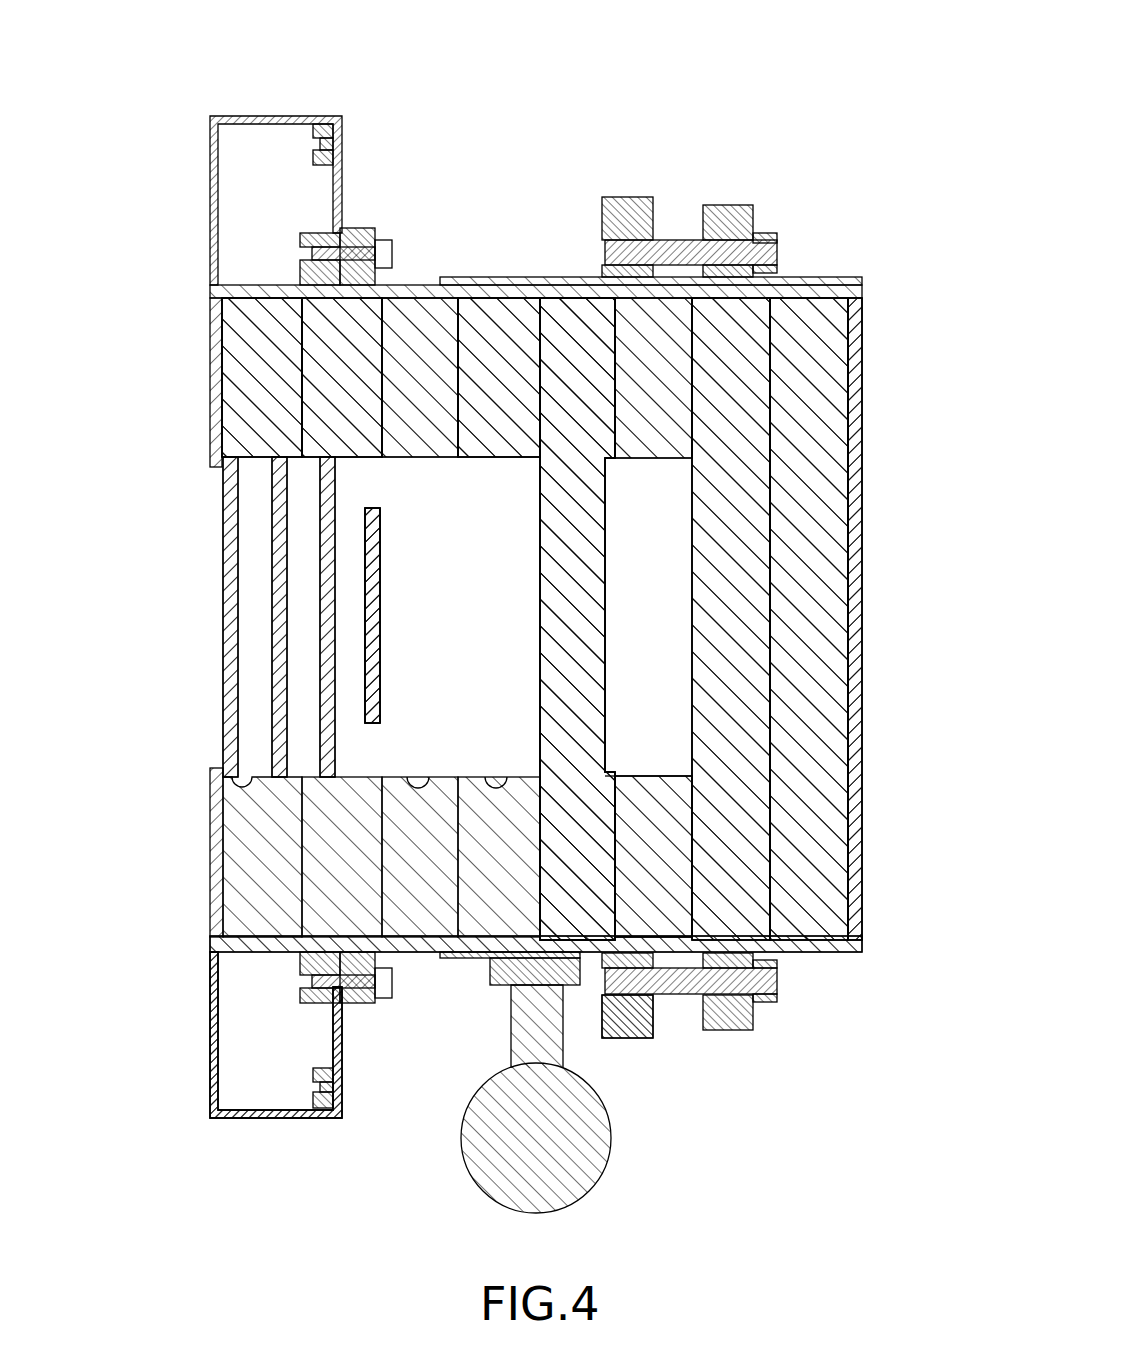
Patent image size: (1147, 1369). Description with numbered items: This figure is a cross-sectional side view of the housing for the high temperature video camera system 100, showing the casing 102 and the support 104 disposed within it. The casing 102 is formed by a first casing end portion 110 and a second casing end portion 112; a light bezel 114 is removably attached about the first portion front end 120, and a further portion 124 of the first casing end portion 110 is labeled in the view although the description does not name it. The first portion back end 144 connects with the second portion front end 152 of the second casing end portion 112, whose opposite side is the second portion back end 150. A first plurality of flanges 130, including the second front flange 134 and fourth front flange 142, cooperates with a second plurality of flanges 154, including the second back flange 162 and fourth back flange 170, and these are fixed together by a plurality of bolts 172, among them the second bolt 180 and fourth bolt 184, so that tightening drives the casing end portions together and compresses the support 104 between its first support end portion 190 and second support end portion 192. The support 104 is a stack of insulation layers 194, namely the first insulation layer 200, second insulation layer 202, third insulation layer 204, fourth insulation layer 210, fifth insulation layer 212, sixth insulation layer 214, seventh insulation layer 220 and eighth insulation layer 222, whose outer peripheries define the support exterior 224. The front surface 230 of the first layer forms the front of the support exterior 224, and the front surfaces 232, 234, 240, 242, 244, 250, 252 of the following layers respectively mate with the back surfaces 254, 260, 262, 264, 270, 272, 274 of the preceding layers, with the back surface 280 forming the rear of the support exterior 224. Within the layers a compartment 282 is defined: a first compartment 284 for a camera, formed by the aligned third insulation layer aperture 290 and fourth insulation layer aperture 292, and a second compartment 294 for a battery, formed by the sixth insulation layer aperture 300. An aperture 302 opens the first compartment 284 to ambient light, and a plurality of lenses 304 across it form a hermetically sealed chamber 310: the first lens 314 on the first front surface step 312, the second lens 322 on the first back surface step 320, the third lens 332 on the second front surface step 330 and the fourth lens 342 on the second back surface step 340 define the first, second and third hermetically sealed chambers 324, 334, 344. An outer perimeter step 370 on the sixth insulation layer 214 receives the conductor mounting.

The high temperature video camera system 100 is at (895, 102).
The casing 102 is at (855, 387).
The support 104 is at (492, 292).
The first casing end portion 110 is at (367, 945).
The second casing end portion 112 is at (630, 1025).
The light bezel 114 is at (272, 1120).
The first portion front end 120 is at (245, 956).
The bracket 124 is at (213, 1090).
The first plurality of flanges 130 is at (661, 581).
The second front flange 134 is at (652, 330).
The fourth front flange 142 is at (678, 945).
The first portion back end 144 is at (503, 947).
The second portion back end 150 is at (835, 948).
The second portion front end 152 is at (575, 945).
The second plurality of flanges 154 is at (788, 559).
The second back flange 162 is at (727, 217).
The fourth back flange 170 is at (728, 1017).
The plurality of bolts 172 is at (757, 566).
The second bolt 180 is at (735, 248).
The fourth bolt 184 is at (737, 985).
The first support end portion 190 is at (245, 905).
The second support end portion 192 is at (833, 893).
The plurality of insulation layers 194 is at (527, 576).
The first insulation layer 200 is at (293, 353).
The second insulation layer 202 is at (340, 317).
The third insulation layer 204 is at (420, 330).
The fourth insulation layer 210 is at (477, 950).
The fifth insulation layer 212 is at (592, 828).
The sixth insulation layer 214 is at (668, 880).
The seventh insulation layer 220 is at (752, 358).
The eighth insulation layer 222 is at (815, 352).
The support exterior 224 is at (572, 290).
The front surface of the first insulation layer 230 is at (258, 336).
The front surface of the second insulation layer 232 is at (258, 345).
The front surface of the third insulation layer 234 is at (372, 310).
The front surface of the fourth insulation layer 240 is at (453, 330).
The front surface of the fifth insulation layer 242 is at (526, 326).
The front surface of the sixth insulation layer 244 is at (548, 320).
The front surface of the seventh insulation layer 250 is at (683, 338).
The front surface of the eighth insulation layer 252 is at (810, 353).
The back surface of the first insulation layer 254 is at (308, 330).
The back surface of the second insulation layer 260 is at (390, 320).
The back surface of the third insulation layer 262 is at (468, 330).
The back surface of the fourth insulation layer 264 is at (557, 332).
The back surface of the fifth insulation layer 270 is at (626, 338).
The back surface of the sixth insulation layer 272 is at (740, 326).
The back surface of the seventh insulation layer 274 is at (858, 300).
The back surface of the eighth insulation layer 280 is at (850, 433).
The compartment 282 is at (686, 619).
The first compartment 284 is at (538, 548).
The third insulation layer aperture 290 is at (418, 782).
The fourth insulation layer aperture 292 is at (490, 782).
The second compartment 294 is at (605, 625).
The sixth insulation layer aperture 300 is at (660, 776).
The aperture 302 is at (363, 710).
The plurality of lenses 304 is at (229, 617).
The hermetically sealed chamber 310 is at (242, 722).
The first front surface step 312 is at (233, 462).
The first lens 314 is at (232, 685).
The first back surface step 320 is at (345, 477).
The second lens 322 is at (280, 627).
The first hermetically sealed chamber 324 is at (268, 786).
The second front surface step 330 is at (297, 490).
The third lens 332 is at (323, 573).
The second hermetically sealed chamber 334 is at (318, 782).
The second back surface step 340 is at (368, 515).
The fourth lens 342 is at (370, 540).
The third hermetically sealed chamber 344 is at (358, 722).
The outer perimeter step 370 is at (664, 322).